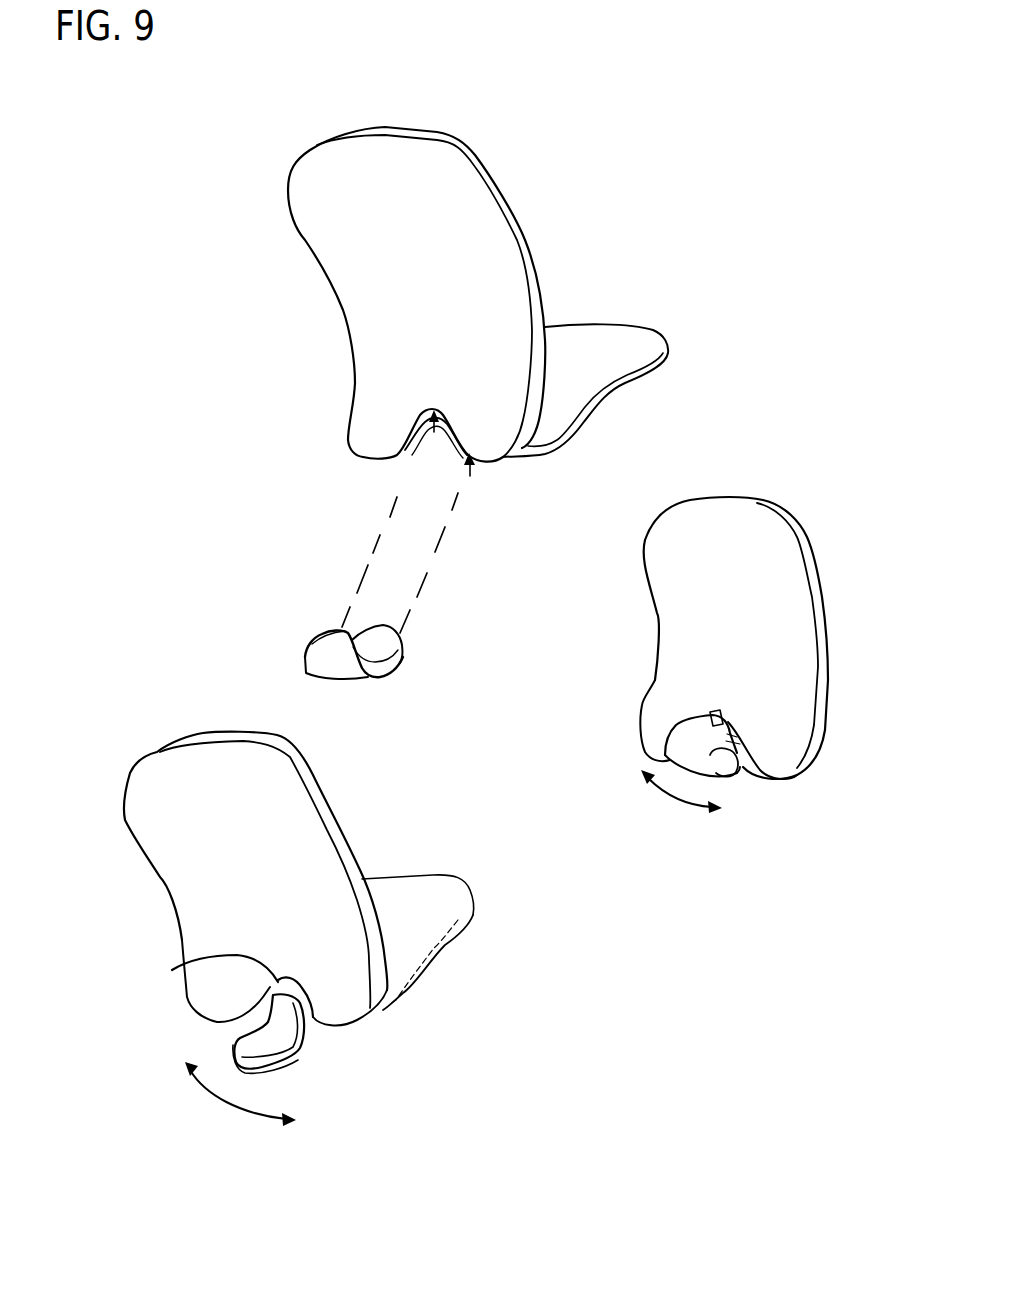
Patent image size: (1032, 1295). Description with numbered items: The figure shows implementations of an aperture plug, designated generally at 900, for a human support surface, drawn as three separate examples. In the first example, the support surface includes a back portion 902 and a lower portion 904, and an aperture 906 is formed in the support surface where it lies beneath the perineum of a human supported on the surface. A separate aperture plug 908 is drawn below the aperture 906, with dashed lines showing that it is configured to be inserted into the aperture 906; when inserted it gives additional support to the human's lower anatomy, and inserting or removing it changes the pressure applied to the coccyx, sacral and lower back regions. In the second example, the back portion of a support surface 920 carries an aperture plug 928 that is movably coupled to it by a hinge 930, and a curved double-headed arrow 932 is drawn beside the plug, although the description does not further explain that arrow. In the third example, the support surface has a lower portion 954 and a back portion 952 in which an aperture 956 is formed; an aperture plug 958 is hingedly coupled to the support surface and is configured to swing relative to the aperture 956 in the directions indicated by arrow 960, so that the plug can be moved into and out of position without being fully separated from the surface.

The aperture plug implementations 900 is at (806, 98).
The back portion 902 is at (307, 178).
The lower portion 904 is at (622, 338).
The aperture 906 is at (427, 453).
The aperture plug 908 is at (320, 658).
The support surface 920 is at (758, 527).
The aperture plug 928 is at (682, 742).
The hinge 930 is at (722, 717).
The rotation direction of knob 932 is at (677, 800).
The back portion 952 is at (160, 777).
The lower portion 954 is at (433, 913).
The aperture 956 is at (172, 970).
The aperture plug 958 is at (302, 1055).
The arrow 960 is at (228, 1103).